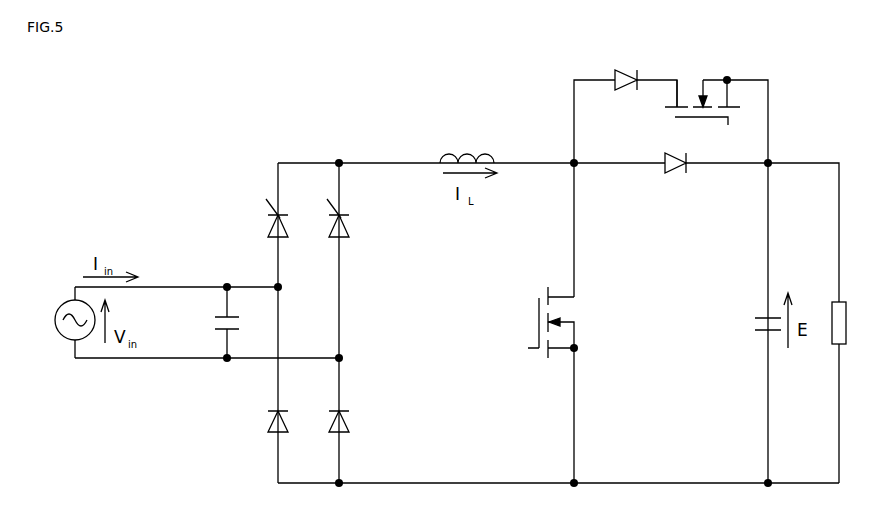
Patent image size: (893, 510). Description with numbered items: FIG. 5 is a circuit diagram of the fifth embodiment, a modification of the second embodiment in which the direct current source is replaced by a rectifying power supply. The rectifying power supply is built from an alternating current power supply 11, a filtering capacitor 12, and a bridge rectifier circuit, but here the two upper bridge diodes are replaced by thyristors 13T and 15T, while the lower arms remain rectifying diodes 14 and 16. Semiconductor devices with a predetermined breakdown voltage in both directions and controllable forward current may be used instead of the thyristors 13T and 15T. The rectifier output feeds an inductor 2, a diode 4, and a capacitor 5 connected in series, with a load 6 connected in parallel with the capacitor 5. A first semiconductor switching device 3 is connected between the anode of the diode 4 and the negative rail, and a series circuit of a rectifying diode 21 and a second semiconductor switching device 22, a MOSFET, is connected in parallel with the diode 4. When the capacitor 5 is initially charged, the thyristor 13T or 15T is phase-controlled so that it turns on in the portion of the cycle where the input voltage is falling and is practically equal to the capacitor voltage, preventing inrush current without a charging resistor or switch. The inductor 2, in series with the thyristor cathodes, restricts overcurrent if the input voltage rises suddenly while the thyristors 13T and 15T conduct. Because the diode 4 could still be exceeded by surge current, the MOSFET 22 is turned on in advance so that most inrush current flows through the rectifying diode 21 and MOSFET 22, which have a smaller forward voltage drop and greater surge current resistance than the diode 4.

The alternating current power supply 11 is at (62, 308).
The filtering capacitor 12 is at (221, 310).
The thyristor 13T is at (268, 193).
The thyristor 15T is at (327, 225).
The rectifying diode 14 is at (270, 403).
The rectifying diode 16 is at (333, 403).
The inductor 2 is at (459, 145).
The first semiconductor switching device 3 is at (527, 311).
The diode 4 is at (657, 157).
The rectifying diode 21 is at (627, 65).
The second semiconductor switching device 22 is at (700, 75).
The capacitor 5 is at (757, 310).
The load 6 is at (843, 315).